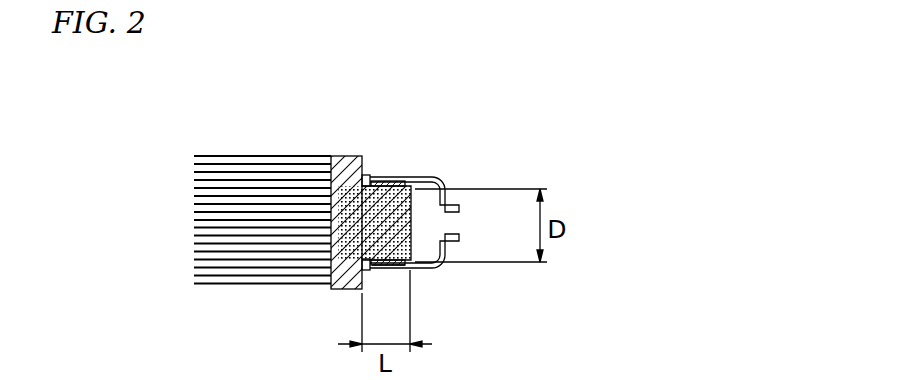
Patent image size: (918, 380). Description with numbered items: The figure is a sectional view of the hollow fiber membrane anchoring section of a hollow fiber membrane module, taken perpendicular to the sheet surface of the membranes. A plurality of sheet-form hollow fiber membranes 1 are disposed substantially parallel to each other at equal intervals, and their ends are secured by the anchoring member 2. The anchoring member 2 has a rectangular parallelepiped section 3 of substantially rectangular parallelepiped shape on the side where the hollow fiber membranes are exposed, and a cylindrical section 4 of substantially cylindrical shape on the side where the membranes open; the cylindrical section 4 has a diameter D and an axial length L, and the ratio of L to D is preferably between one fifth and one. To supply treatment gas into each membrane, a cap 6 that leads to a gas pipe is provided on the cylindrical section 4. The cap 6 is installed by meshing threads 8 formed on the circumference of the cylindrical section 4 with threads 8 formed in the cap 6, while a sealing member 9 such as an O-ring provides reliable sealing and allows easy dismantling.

The sheet-form hollow fiber membrane 1 is at (237, 287).
The anchoring member 2 is at (338, 73).
The rectangular parallelepiped section 3 is at (350, 157).
The cylindrical section 4 is at (369, 184).
The cap 6 is at (433, 178).
The threads 8 is at (375, 267).
The sealing member 9 is at (399, 181).